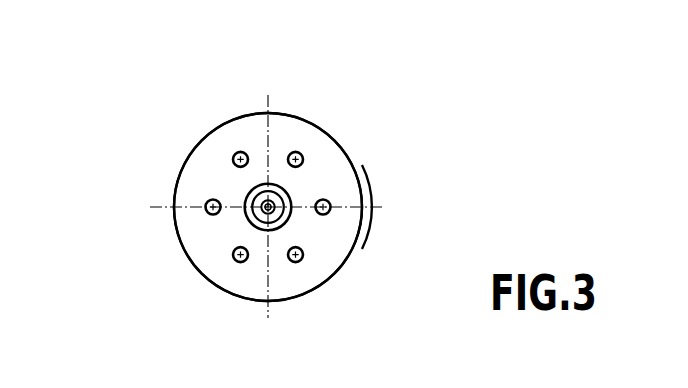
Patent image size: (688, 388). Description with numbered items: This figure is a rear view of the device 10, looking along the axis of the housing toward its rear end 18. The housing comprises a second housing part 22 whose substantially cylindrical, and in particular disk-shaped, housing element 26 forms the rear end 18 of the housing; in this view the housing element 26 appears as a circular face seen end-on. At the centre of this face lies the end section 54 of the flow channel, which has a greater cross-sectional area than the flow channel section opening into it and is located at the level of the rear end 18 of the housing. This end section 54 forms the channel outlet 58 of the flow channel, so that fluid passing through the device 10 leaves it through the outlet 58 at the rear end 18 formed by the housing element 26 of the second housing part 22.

The device 10 is at (124, 106).
The rear end 18 is at (220, 238).
The second housing part 22 is at (366, 134).
The housing element 26 is at (352, 183).
The end section 54 is at (273, 231).
The channel outlet 58 is at (273, 182).